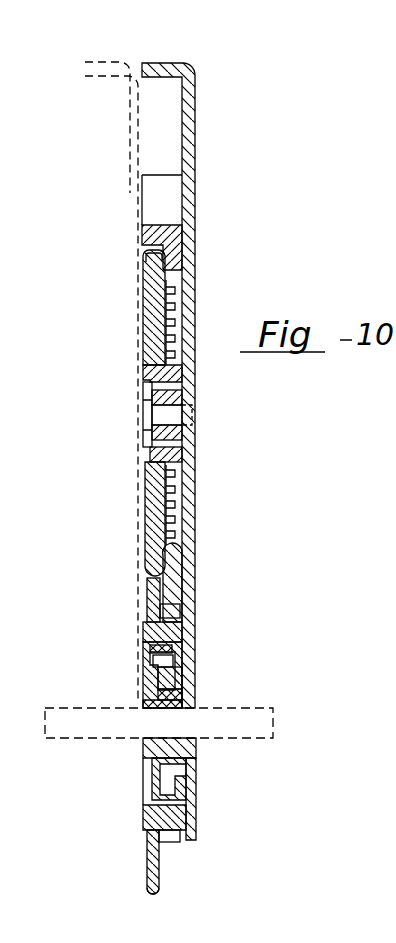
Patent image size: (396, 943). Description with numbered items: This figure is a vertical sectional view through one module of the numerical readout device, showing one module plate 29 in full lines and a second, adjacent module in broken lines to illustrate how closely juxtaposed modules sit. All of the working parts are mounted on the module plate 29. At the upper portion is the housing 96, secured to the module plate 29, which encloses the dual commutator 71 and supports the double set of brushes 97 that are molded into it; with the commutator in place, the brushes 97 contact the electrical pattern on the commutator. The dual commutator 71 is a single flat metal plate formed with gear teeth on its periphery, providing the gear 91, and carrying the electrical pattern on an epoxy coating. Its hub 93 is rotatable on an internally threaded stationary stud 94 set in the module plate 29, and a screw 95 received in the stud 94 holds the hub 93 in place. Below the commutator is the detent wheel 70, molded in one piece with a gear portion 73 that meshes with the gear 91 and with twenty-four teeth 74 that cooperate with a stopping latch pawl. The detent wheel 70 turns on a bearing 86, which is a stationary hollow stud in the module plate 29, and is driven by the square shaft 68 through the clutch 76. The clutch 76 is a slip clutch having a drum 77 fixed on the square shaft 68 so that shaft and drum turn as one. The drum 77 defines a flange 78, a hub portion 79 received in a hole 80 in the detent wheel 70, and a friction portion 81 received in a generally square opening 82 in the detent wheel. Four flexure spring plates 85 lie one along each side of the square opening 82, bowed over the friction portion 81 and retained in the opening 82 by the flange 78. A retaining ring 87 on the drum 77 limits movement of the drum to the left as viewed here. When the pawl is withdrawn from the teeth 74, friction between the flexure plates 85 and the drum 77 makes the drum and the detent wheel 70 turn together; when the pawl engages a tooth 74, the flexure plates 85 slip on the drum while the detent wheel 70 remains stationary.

The module plate 29 is at (130, 122).
The housing 96 is at (142, 236).
The gear 91 is at (148, 259).
The brushes 97 is at (170, 290).
The dual commutator 71 is at (150, 327).
The hub 93 is at (143, 364).
The internally threaded stationary stud 94 is at (190, 397).
The screw 95 is at (147, 432).
The gear portion 73 is at (147, 580).
The teeth 74 is at (160, 612).
The detent wheel 70 is at (150, 626).
The flange 78 is at (149, 646).
The clutch 76 is at (141, 667).
The drum 77 is at (143, 690).
The generally square opening 82 is at (172, 630).
The friction portion 81 is at (173, 656).
The hole 80 is at (175, 680).
The retaining ring 87 is at (185, 690).
The square shaft 68 is at (275, 718).
The hub portion 79 is at (196, 753).
The bearing 86 is at (192, 785).
The flexure spring plates 85 is at (188, 815).